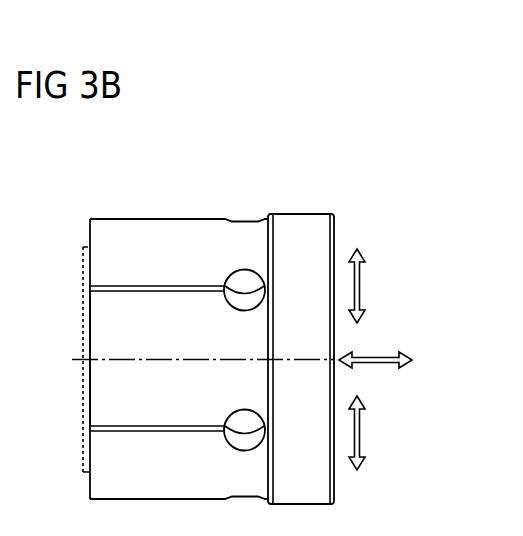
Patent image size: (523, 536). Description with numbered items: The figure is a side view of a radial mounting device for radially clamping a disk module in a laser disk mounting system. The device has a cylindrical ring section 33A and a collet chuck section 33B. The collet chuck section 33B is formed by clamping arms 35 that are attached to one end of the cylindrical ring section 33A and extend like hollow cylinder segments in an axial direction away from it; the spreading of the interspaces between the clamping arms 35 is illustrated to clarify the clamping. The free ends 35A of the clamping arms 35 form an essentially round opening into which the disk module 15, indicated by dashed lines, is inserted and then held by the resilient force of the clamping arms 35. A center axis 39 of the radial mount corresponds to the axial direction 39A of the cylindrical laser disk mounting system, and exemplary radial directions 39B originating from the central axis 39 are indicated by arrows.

The disk module 15 is at (83, 385).
The cylindrical ring section 33A is at (305, 213).
The collet chuck section 33B is at (92, 211).
The clamping arms 35 is at (103, 320).
The free ends of the clamping arms 35A is at (128, 218).
The center axis 39 is at (145, 358).
The axial direction 39A is at (377, 357).
The radial directions 39B is at (358, 288).